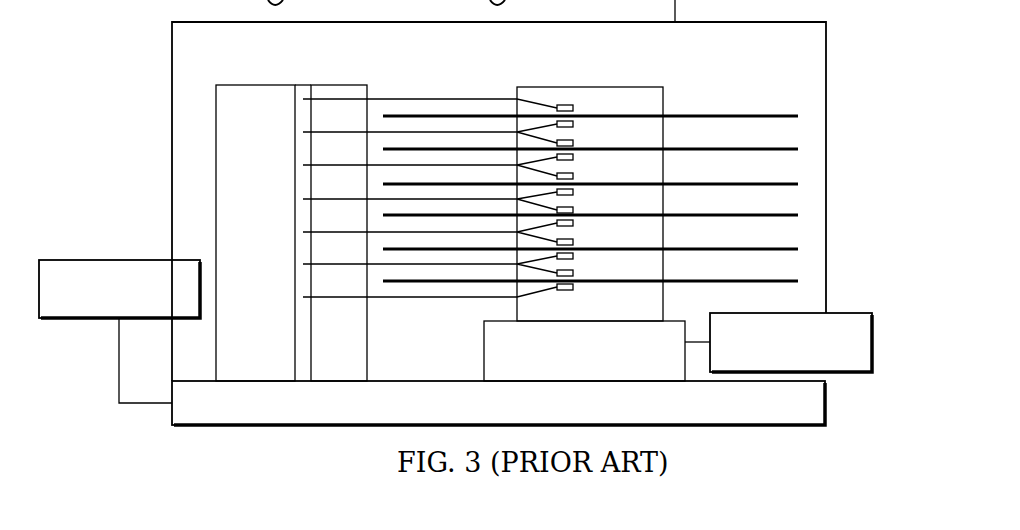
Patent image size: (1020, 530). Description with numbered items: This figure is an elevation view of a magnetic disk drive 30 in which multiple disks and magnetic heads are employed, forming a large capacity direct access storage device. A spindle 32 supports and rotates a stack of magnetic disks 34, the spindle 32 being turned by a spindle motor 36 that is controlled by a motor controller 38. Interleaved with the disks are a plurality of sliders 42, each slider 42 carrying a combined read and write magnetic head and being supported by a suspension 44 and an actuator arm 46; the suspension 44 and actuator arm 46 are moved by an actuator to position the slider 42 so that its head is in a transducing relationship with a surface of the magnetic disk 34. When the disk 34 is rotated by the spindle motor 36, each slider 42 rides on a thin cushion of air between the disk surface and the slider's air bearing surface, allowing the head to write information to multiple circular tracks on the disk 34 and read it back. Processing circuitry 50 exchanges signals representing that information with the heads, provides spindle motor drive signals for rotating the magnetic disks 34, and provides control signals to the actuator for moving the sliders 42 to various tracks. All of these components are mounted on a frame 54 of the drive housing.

The magnetic disk drive 30 is at (722, 78).
The spindle 32 is at (643, 87).
The magnetic disk 34 is at (778, 118).
The spindle motor 36 is at (584, 351).
The motor controller 38 is at (860, 375).
The slider 42 is at (580, 66).
The suspension 44 is at (553, 135).
The actuator arm 46 is at (470, 132).
The processing circuitry 50 is at (100, 258).
The frame 54 is at (289, 426).